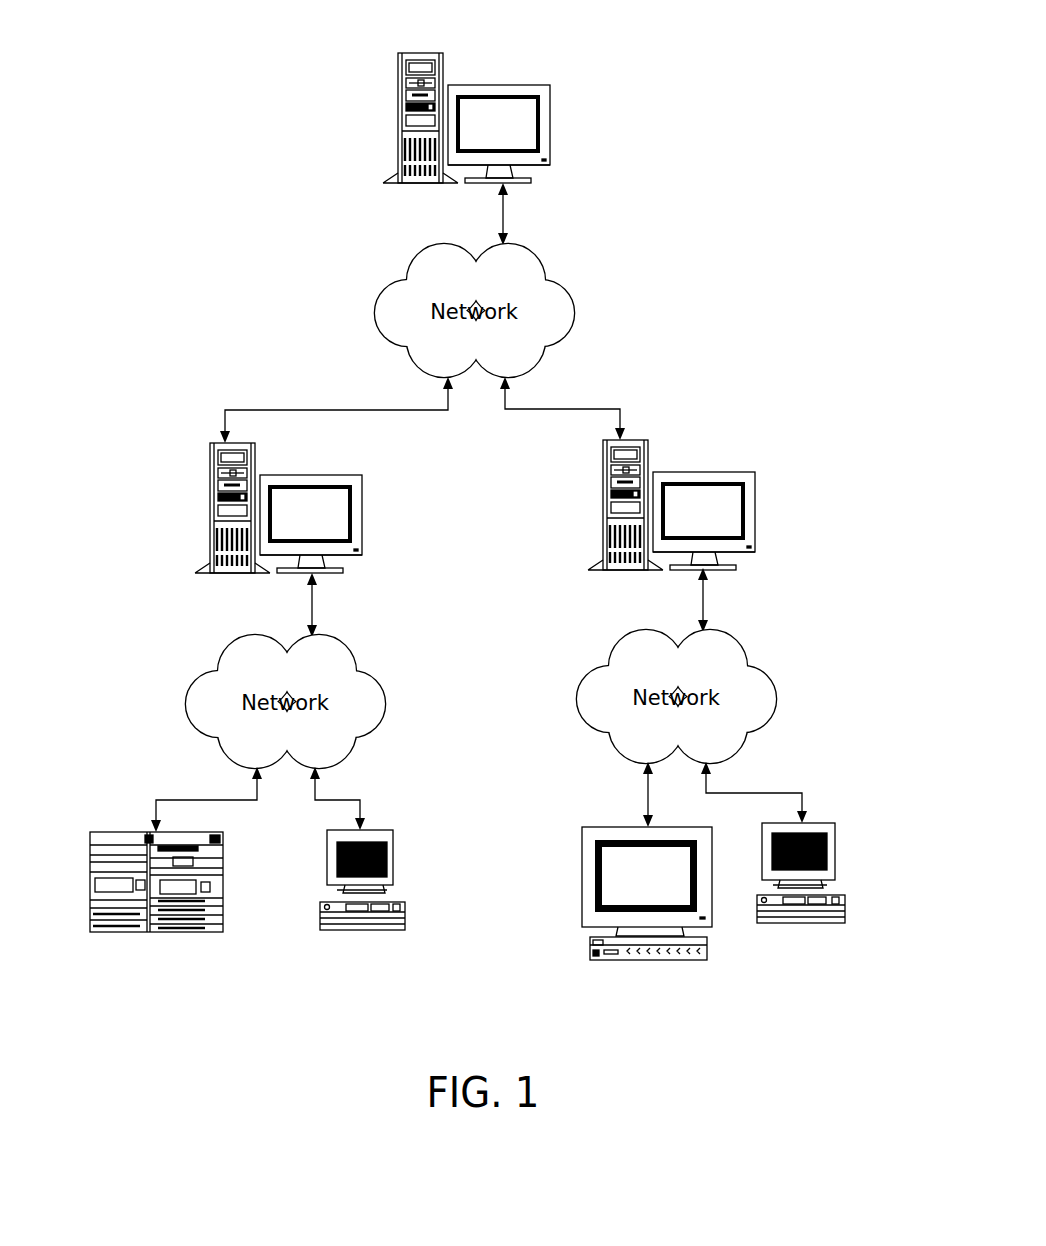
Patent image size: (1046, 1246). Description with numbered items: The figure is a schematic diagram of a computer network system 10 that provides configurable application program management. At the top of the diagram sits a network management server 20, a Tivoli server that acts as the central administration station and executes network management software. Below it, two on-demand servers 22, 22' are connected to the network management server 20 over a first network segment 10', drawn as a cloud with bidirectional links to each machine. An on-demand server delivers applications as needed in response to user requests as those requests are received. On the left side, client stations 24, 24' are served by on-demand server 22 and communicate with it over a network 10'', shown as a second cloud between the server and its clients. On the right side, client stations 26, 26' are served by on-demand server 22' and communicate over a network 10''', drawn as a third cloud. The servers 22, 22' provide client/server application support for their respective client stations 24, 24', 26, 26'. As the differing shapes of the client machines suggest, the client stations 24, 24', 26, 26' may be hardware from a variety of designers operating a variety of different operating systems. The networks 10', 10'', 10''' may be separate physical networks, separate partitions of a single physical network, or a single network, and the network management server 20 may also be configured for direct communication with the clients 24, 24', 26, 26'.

The computer network system 10 is at (743, 119).
The first network segment 10' is at (525, 305).
The network 10'' is at (339, 695).
The network 10''' is at (734, 690).
The network management server 20 is at (550, 114).
The on-demand server 22 is at (325, 519).
The on-demand server 22' is at (721, 514).
The client station 24 is at (140, 860).
The client station 24' is at (409, 865).
The client station 26 is at (609, 908).
The client station 26' is at (835, 847).